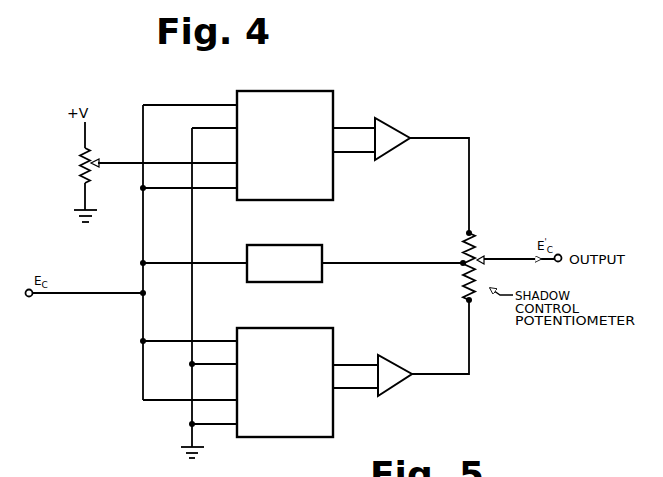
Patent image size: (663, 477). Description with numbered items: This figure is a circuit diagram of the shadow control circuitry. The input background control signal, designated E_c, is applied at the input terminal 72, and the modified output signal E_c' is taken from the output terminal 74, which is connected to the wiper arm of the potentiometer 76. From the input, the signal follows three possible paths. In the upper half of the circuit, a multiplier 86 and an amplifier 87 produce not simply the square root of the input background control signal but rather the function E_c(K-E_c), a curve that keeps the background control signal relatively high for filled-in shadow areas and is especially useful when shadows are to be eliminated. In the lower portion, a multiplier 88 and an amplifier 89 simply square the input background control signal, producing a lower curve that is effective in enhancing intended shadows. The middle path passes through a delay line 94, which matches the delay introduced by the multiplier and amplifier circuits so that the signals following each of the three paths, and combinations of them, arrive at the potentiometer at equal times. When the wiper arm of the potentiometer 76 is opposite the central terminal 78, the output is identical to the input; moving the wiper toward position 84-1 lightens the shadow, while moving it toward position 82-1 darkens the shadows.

The input terminal 72 is at (32, 298).
The output terminal 74 is at (561, 253).
The potentiometer 76 is at (501, 235).
The terminal 78 is at (462, 261).
The position 82-1 is at (467, 301).
The position 84-1 is at (467, 233).
The multiplier 86 is at (314, 90).
The amplifier 87 is at (398, 128).
The multiplier 88 is at (287, 437).
The amplifier 89 is at (398, 387).
The delay line 94 is at (320, 245).